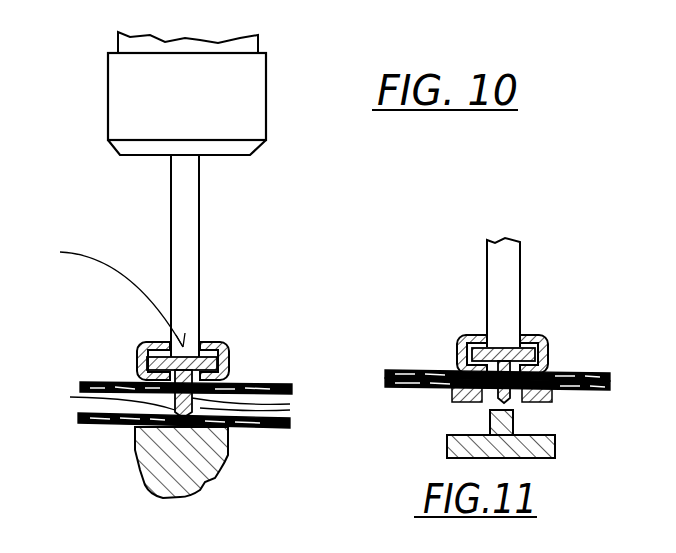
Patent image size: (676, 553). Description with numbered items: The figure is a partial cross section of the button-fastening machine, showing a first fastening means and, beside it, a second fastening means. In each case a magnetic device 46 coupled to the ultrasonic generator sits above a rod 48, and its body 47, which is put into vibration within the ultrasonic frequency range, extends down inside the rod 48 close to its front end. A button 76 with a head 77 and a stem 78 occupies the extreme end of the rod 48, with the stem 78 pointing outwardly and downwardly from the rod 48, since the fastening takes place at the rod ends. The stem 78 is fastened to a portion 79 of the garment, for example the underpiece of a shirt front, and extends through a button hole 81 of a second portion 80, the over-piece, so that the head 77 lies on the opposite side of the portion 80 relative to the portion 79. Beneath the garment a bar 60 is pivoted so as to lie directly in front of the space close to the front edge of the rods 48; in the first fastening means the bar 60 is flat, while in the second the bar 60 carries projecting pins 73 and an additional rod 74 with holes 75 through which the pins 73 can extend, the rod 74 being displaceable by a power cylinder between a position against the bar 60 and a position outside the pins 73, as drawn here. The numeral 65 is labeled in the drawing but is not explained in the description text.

In FIG. 10, the magnetic device 46 is at (228, 95).
In FIG. 10, the body 47 is at (187, 217).
In FIG. 11, the body 47 is at (505, 268).
In FIG. 10, the rod 48 is at (218, 346).
In FIG. 11, the rod 48 is at (532, 337).
In FIG. 10, the bar 60 is at (163, 457).
In FIG. 11, the bar 60 is at (513, 457).
In FIG. 10, the panel 65 is at (200, 552).
In FIG. 11, the projecting pin 73 is at (507, 422).
In FIG. 11, the additional rod 74 is at (552, 393).
In FIG. 11, the hole 75 is at (517, 398).
In FIG. 10, the button 76 is at (110, 292).
In FIG. 10, the head 77 is at (142, 360).
In FIG. 10, the stem 78 is at (167, 395).
In FIG. 10, the portion 79 is at (265, 430).
In FIG. 10, the second portion 80 is at (272, 384).
In FIG. 10, the button hole 81 is at (240, 407).